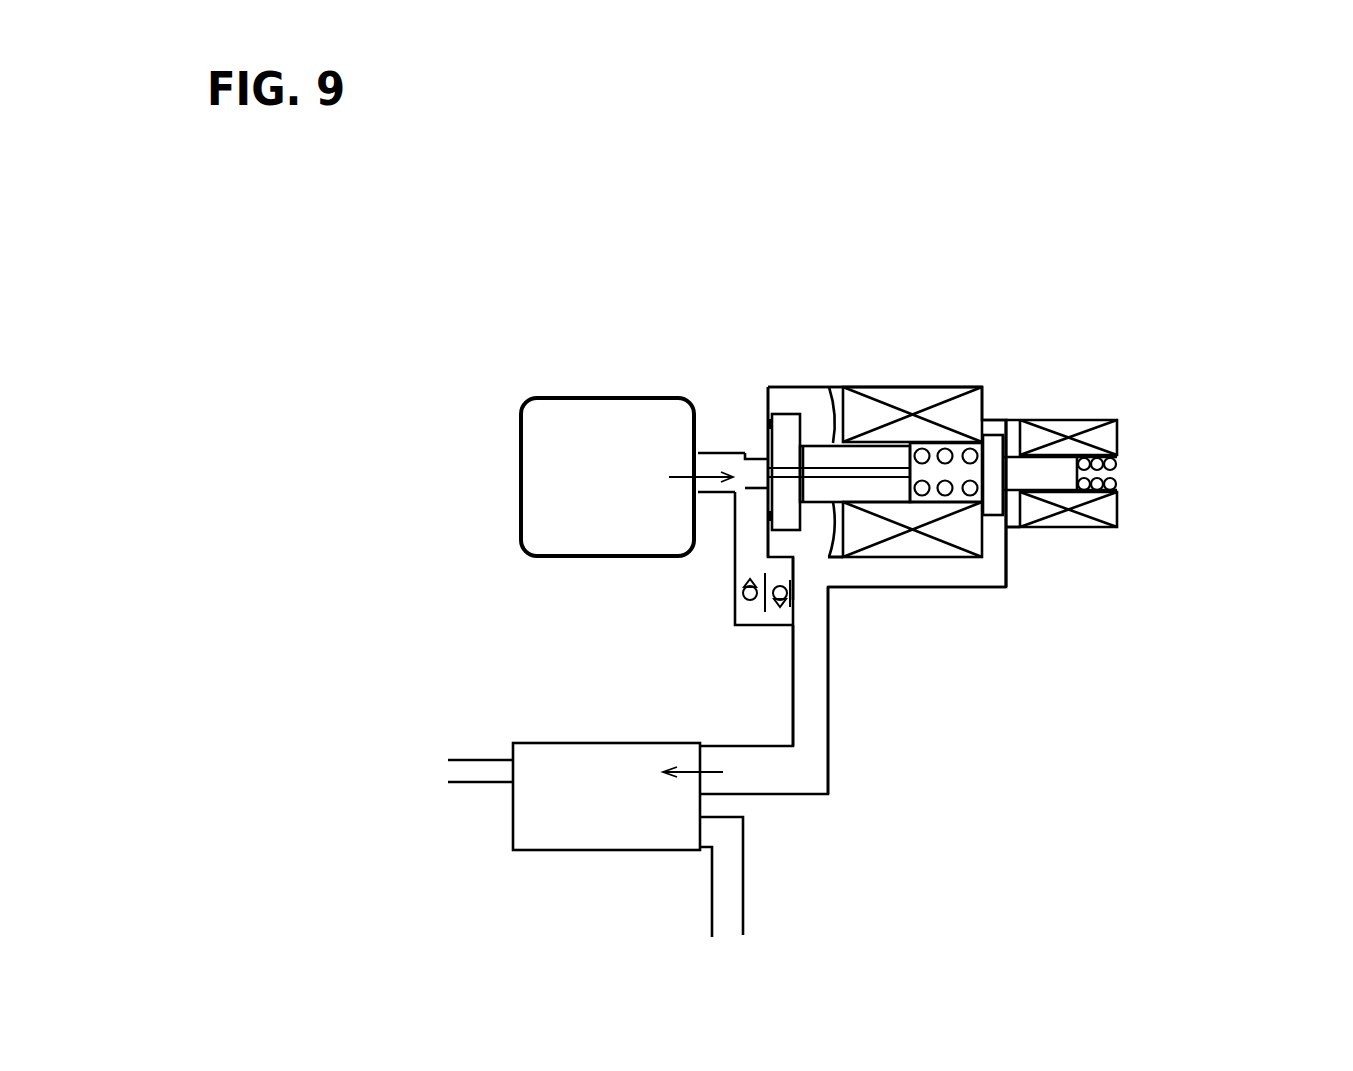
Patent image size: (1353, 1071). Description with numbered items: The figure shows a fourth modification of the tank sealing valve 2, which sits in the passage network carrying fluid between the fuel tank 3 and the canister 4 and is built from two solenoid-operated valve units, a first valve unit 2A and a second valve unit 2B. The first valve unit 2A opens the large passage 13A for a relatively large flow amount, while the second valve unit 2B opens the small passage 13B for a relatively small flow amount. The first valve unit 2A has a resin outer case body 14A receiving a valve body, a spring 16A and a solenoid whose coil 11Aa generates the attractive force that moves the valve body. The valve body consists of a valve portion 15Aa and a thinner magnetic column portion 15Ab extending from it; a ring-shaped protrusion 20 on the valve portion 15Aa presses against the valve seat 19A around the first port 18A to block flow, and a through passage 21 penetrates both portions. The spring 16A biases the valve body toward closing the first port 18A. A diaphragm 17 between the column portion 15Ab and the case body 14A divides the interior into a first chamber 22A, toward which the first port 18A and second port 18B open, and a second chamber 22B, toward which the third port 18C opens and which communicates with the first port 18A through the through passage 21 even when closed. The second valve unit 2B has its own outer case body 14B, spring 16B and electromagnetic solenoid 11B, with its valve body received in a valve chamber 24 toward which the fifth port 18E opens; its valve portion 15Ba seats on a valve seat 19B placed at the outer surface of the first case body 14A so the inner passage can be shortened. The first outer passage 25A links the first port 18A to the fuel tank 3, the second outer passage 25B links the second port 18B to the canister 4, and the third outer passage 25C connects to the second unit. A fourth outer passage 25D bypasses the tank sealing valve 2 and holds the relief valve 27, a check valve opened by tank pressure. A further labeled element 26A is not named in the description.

The tank sealing valve 2 is at (1216, 231).
The first valve unit 2A is at (872, 292).
The second valve unit 2B is at (1174, 368).
The fuel tank 3 is at (541, 471).
The canister 4 is at (527, 833).
The coil 11Aa is at (935, 437).
The electromagnetic solenoid 11B is at (1117, 431).
The large passage 13A is at (732, 414).
The small passage 13B is at (1089, 631).
The outer case body 14A is at (842, 373).
The outer case body 14B is at (1132, 517).
The valve portion 15Aa is at (790, 427).
The column portion 15Ab is at (888, 455).
The valve portion 15Ba is at (1010, 442).
The spring 16A is at (947, 445).
The spring 16B is at (1117, 470).
The diaphragm 17 is at (815, 537).
The first port 18A is at (740, 489).
The second port 18B is at (808, 560).
The third port 18C is at (975, 447).
The fifth port 18E is at (992, 528).
The valve seat 19A is at (768, 418).
The valve seat 19B is at (983, 490).
The protrusion 20 is at (752, 459).
The through passage 21 is at (888, 473).
The first chamber 22A is at (816, 410).
The second chamber 22B is at (960, 477).
The valve chamber 24 is at (1008, 437).
The first outer passage 25A is at (706, 453).
The second outer passage 25B is at (830, 748).
The third outer passage 25C is at (945, 578).
The fourth outer passage 25D is at (743, 550).
The inlet 26A is at (717, 456).
The relief valve 27 is at (722, 632).